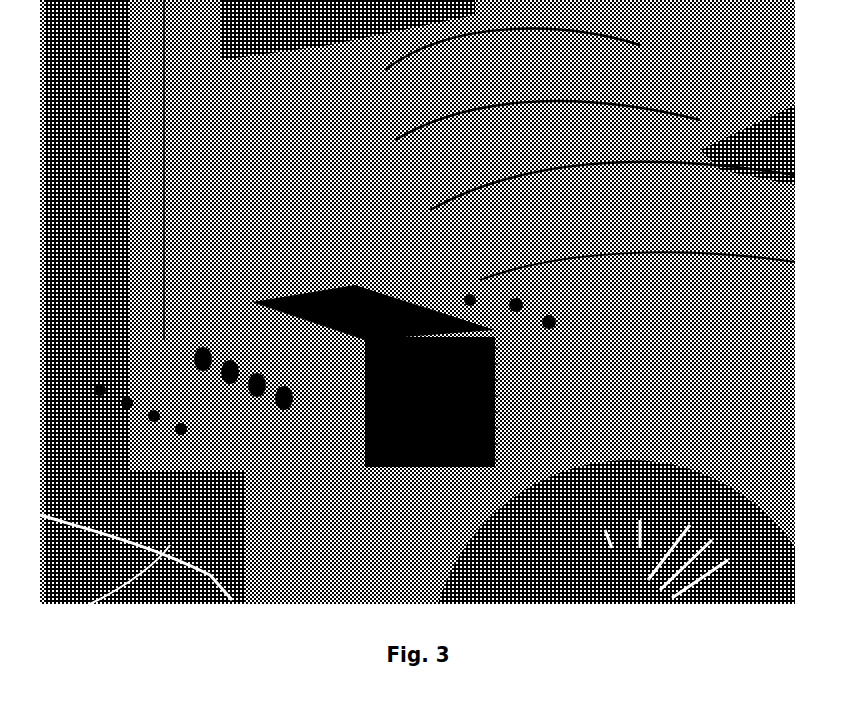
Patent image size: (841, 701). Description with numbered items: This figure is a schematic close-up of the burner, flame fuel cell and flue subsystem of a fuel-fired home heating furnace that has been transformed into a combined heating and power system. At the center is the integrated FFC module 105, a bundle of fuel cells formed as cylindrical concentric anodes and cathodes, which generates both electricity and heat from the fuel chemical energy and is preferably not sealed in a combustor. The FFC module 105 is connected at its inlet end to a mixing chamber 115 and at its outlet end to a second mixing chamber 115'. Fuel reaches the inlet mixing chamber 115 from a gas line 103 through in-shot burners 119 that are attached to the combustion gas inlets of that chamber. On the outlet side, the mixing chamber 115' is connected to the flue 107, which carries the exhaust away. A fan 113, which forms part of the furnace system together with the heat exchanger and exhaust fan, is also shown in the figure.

The gas line 103 is at (228, 553).
The FFC module 105 is at (348, 300).
The flue 107 is at (582, 165).
The fan 113 is at (630, 580).
The mixing chamber 115 is at (193, 323).
The mixing chamber 115' is at (443, 334).
The in-shot burners 119 is at (165, 365).